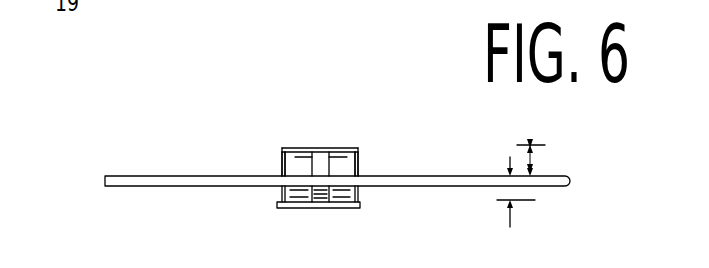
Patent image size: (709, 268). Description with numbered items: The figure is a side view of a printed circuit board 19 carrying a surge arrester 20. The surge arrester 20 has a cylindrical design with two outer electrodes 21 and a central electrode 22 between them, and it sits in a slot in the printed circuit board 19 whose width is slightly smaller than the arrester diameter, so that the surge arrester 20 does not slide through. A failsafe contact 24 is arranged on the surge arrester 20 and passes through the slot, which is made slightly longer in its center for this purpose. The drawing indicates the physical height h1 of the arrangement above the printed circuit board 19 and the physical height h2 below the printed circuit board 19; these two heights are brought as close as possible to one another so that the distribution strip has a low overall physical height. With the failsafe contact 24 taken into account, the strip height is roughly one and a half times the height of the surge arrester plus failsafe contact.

The printed circuit board 19 is at (150, 186).
The surge arrester 20 is at (341, 165).
The outer electrode 21 is at (283, 160).
The central electrode 22 is at (319, 153).
The failsafe contact 24 is at (350, 206).
The physical height above the printed circuit board h1 is at (540, 163).
The physical height below the printed circuit board h2 is at (535, 200).